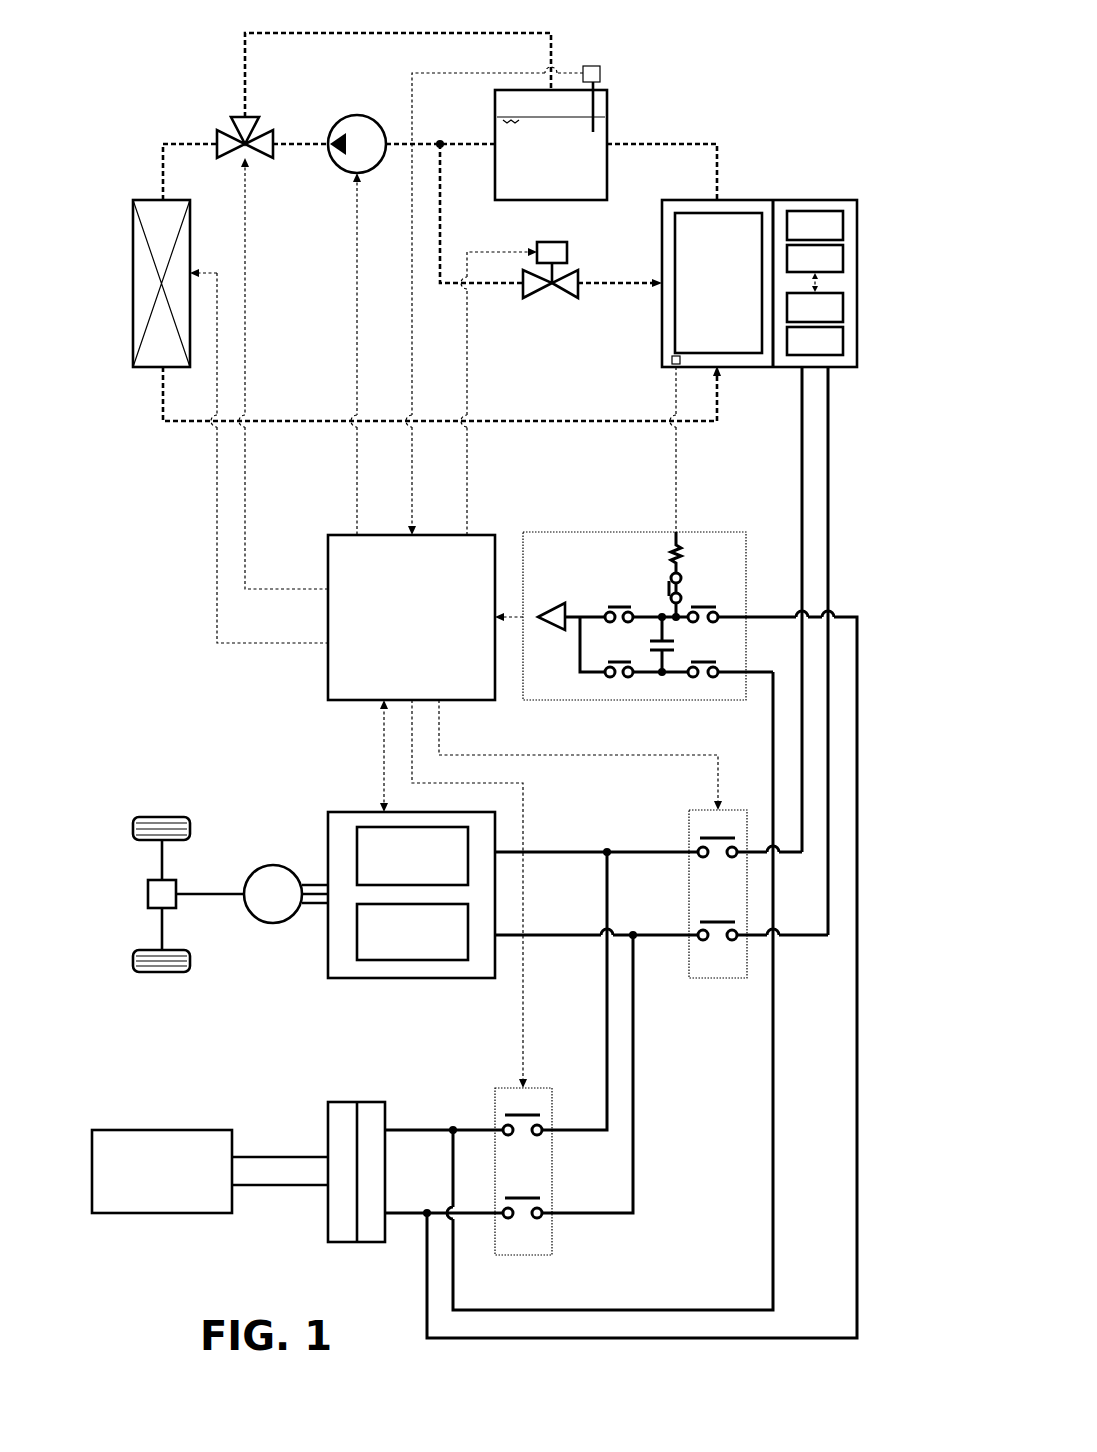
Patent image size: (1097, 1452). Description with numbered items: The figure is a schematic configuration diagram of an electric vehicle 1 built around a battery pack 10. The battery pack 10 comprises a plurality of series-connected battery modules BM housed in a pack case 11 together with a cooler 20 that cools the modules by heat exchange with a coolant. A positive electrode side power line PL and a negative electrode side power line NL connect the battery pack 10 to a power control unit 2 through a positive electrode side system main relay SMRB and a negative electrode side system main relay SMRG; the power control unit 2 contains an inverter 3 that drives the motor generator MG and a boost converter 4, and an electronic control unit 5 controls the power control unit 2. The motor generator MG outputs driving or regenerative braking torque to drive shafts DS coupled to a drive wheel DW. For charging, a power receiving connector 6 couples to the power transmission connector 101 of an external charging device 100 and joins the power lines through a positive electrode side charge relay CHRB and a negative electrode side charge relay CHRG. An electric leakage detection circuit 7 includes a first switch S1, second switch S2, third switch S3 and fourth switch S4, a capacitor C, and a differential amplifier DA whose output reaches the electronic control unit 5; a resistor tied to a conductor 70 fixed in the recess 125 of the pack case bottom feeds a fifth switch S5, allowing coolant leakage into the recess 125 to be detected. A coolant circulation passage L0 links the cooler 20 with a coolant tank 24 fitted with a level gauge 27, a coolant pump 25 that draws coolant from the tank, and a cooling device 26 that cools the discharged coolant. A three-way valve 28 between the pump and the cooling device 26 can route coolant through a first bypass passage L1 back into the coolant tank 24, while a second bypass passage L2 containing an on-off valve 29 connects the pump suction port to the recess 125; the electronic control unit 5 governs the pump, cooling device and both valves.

The electric vehicle 1 is at (208, 788).
The power control unit 2 is at (392, 908).
The inverter 3 is at (355, 856).
The boost converter 4 is at (408, 962).
The electronic control unit 5 is at (328, 547).
The power receiving connector 6 is at (366, 1244).
The electric leakage detection circuit 7 is at (630, 617).
The battery pack 10 is at (760, 292).
The pack case 11 is at (860, 206).
The cooler 20 is at (693, 256).
The coolant tank 24 is at (608, 170).
The coolant pump 25 is at (345, 173).
The cooling device 26 is at (136, 204).
The level gauge 27 is at (602, 74).
The three-way valve 28 is at (232, 134).
The on-off valve 29 is at (578, 272).
The conductor 70 is at (670, 362).
The external charging device 100 is at (162, 1215).
The power transmission connector 101 is at (328, 1115).
The recess 125 is at (661, 326).
The battery modules BM is at (845, 302).
The capacitor C is at (645, 644).
The differential amplifier DA is at (548, 630).
The drive shafts DS is at (168, 930).
The drive wheel DW is at (160, 975).
The coolant circulation passage L0 is at (293, 419).
The first bypass passage L1 is at (292, 36).
The second bypass passage L2 is at (441, 226).
The motor generator MG is at (286, 894).
The negative electrode side power line NL is at (562, 942).
The positive electrode side power line PL is at (562, 858).
The first switch S1 is at (702, 680).
The second switch S2 is at (717, 610).
The third switch S3 is at (617, 680).
The fourth switch S4 is at (603, 610).
The fifth switch S5 is at (665, 588).
The positive electrode side system main relay SMRB is at (680, 842).
The negative electrode side system main relay SMRG is at (714, 950).
The positive electrode side charge relay CHRB is at (488, 1118).
The negative electrode side charge relay CHRG is at (562, 1225).